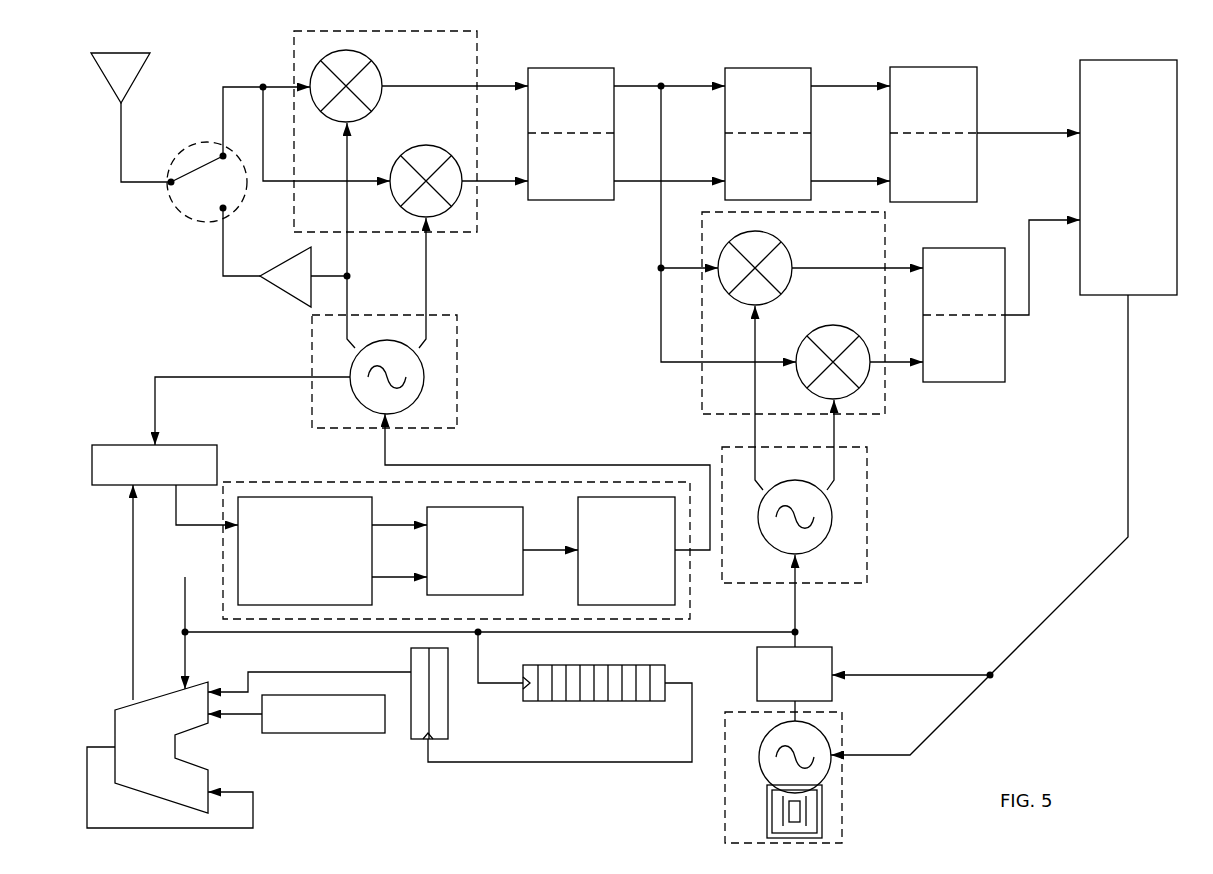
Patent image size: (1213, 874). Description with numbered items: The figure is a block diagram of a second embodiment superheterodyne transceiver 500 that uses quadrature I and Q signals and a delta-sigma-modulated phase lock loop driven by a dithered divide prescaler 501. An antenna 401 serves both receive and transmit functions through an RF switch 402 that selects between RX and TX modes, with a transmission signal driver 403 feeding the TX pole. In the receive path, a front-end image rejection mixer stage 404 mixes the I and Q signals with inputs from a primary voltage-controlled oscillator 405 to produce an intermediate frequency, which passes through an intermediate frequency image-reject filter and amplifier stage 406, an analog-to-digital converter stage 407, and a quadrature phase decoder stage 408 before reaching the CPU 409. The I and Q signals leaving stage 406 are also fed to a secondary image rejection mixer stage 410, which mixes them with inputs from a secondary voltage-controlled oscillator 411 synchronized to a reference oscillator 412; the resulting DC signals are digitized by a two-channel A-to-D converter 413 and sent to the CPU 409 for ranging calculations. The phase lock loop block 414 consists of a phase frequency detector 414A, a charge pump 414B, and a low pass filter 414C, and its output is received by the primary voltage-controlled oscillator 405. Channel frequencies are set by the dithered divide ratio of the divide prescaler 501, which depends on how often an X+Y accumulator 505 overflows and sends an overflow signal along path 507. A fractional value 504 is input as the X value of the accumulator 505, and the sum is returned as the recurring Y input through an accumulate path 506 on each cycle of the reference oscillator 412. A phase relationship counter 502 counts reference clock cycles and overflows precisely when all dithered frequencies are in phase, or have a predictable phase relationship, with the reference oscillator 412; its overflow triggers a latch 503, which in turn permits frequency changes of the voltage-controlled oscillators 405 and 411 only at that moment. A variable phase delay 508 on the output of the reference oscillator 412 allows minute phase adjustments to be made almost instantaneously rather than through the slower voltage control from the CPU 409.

The antenna 401 is at (121, 70).
The RF switch 402 is at (182, 213).
The transmission signal driver 403 is at (286, 290).
The front-end image rejection mixer stage 404 is at (477, 226).
The primary voltage-controlled oscillator 405 is at (456, 314).
The intermediate frequency image-reject filter and amplifier stage 406 is at (614, 77).
The analog-to-digital converter stage 407 is at (811, 77).
The quadrature phase decoder stage 408 is at (977, 76).
The CPU 409 is at (1145, 202).
The secondary image rejection mixer stage 410 is at (702, 392).
The secondary voltage-controlled oscillator 411 is at (867, 487).
The reference oscillator 412 is at (842, 796).
The two-channel A-to-D converter 413 is at (1005, 373).
The phase lock loop block 414 is at (325, 482).
The phase frequency detector 414A is at (283, 599).
The charge pump 414B is at (453, 587).
The low pass filter 414C is at (604, 599).
The second embodiment superheterodyne transceiver 500 is at (1061, 678).
The dithered divide prescaler 501 is at (138, 445).
The phase relationship counter 502 is at (598, 701).
The latch 503 is at (448, 712).
The fractional value 504 is at (293, 733).
The X+Y accumulator 505 is at (126, 706).
The accumulate path 506 is at (253, 808).
The overflow path 507 is at (133, 596).
The variable phase delay 508 is at (832, 650).